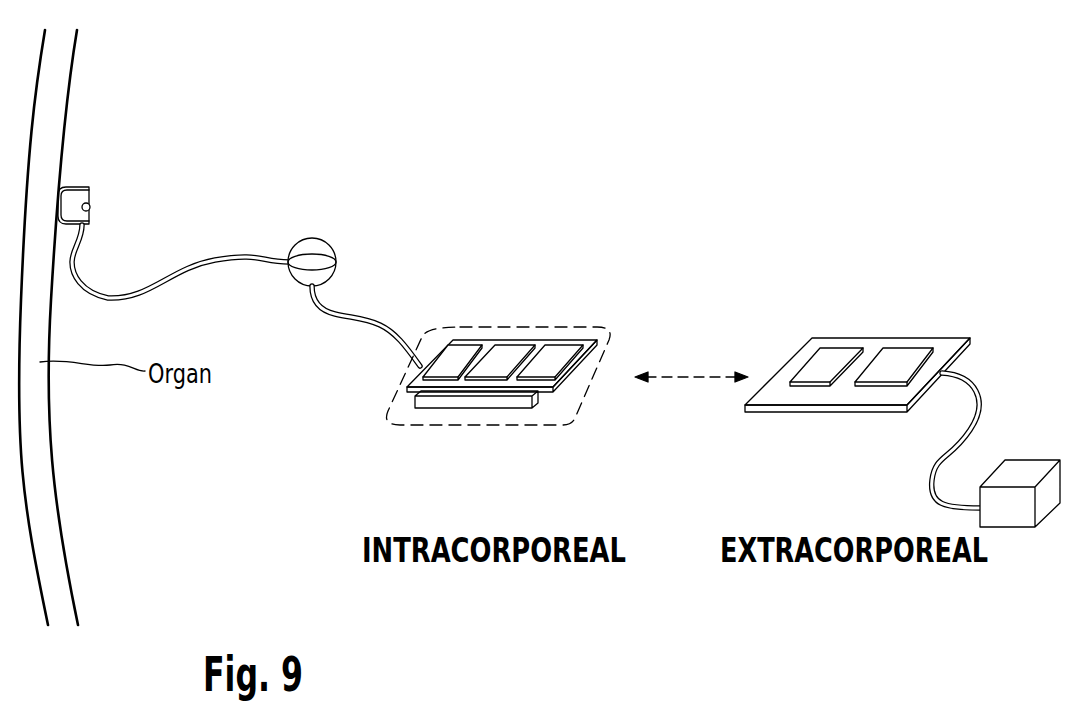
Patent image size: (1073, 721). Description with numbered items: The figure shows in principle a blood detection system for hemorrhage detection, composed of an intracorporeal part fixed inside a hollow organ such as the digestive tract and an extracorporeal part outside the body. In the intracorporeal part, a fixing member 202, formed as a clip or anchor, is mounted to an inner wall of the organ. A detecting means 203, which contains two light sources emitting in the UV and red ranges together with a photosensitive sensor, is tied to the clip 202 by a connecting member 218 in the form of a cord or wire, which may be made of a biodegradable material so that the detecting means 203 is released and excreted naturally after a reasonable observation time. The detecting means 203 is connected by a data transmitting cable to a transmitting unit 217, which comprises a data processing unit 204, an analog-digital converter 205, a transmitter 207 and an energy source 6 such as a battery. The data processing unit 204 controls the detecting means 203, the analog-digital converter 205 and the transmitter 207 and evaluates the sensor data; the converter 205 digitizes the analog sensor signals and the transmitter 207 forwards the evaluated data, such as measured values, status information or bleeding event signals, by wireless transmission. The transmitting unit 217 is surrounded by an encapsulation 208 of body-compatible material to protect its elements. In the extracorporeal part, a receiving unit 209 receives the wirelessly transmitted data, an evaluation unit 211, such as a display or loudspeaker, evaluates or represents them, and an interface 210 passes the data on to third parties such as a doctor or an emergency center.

The fixing member 202 is at (90, 207).
The connecting member 218 is at (212, 261).
The detecting means 203 is at (336, 252).
The transmitting unit 217 is at (555, 234).
The data processing unit 204 is at (465, 353).
The analog-digital converter 205 is at (513, 353).
The transmitter 207 is at (562, 350).
The energy store / battery 6 is at (475, 403).
The encapsulation 208 is at (578, 393).
The receiving unit 209 is at (837, 362).
The interface 210 is at (900, 360).
The evaluation unit 211 is at (1025, 472).